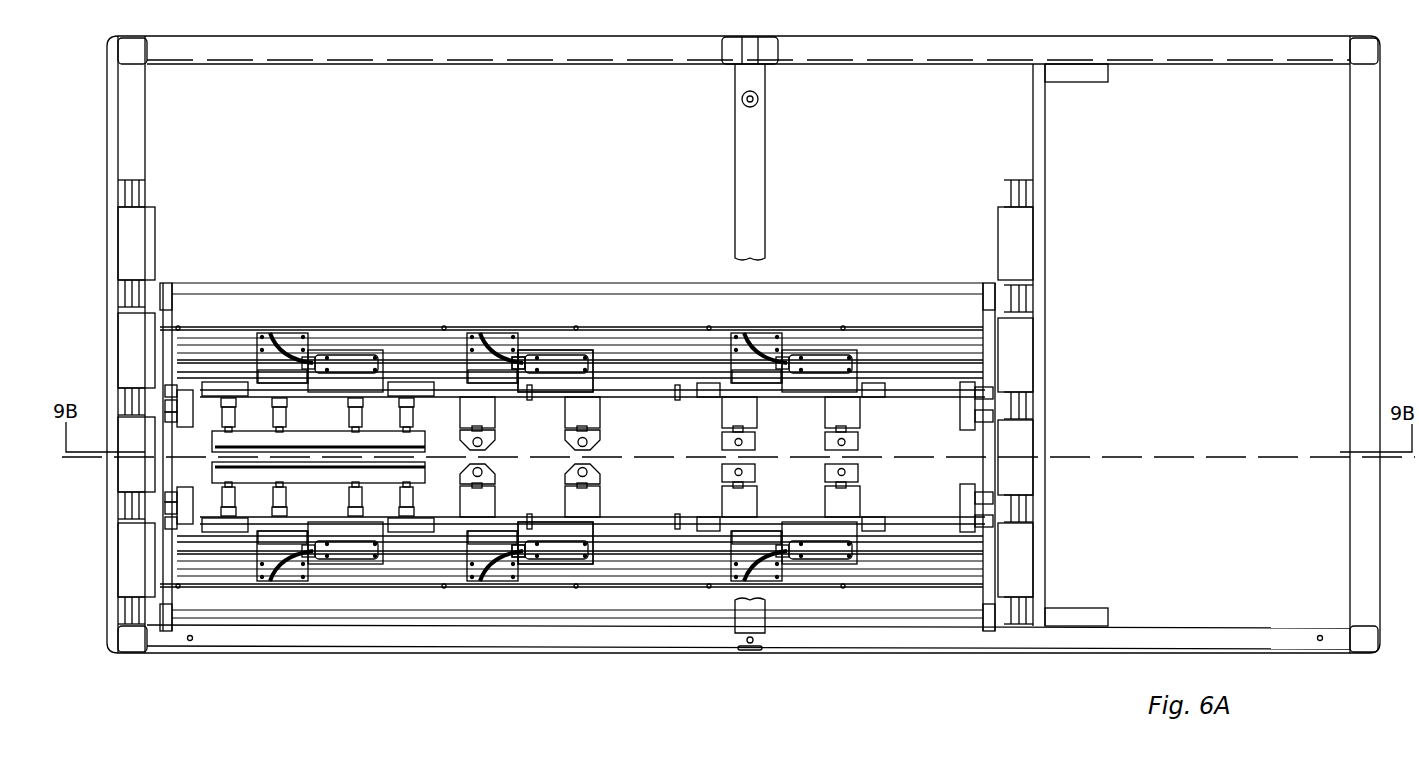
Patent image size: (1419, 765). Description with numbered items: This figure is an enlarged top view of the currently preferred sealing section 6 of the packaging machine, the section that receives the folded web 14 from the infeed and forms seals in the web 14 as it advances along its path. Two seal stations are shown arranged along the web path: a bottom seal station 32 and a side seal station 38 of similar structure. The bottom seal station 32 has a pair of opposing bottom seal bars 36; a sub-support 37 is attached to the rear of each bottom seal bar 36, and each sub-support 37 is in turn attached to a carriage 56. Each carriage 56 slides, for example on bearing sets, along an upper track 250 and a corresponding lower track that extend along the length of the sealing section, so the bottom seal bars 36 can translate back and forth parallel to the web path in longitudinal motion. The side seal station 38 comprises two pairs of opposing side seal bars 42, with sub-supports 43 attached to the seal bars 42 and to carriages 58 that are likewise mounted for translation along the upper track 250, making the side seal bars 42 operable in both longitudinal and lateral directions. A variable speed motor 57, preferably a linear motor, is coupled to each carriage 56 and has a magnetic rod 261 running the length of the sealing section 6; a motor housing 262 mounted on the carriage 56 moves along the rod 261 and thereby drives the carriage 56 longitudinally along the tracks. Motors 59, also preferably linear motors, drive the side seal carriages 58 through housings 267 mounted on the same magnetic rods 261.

The sealing section 6 is at (344, 210).
The web 14 is at (1063, 458).
The bottom seal station 32 is at (330, 322).
The bottom seal bar 36 is at (213, 431).
The sub-support 37 is at (420, 408).
The side seal station 38 is at (500, 330).
The side seal bar 42 is at (575, 433).
The sub-support 43 is at (612, 404).
The carriage 56 is at (385, 365).
The variable speed motor 57 is at (258, 357).
The carriage 58 is at (592, 382).
The motor 59 is at (568, 355).
The upper track 250 is at (680, 372).
The magnetic rod 261 is at (205, 360).
The motor housing 262 is at (355, 360).
The housing 267 is at (550, 357).